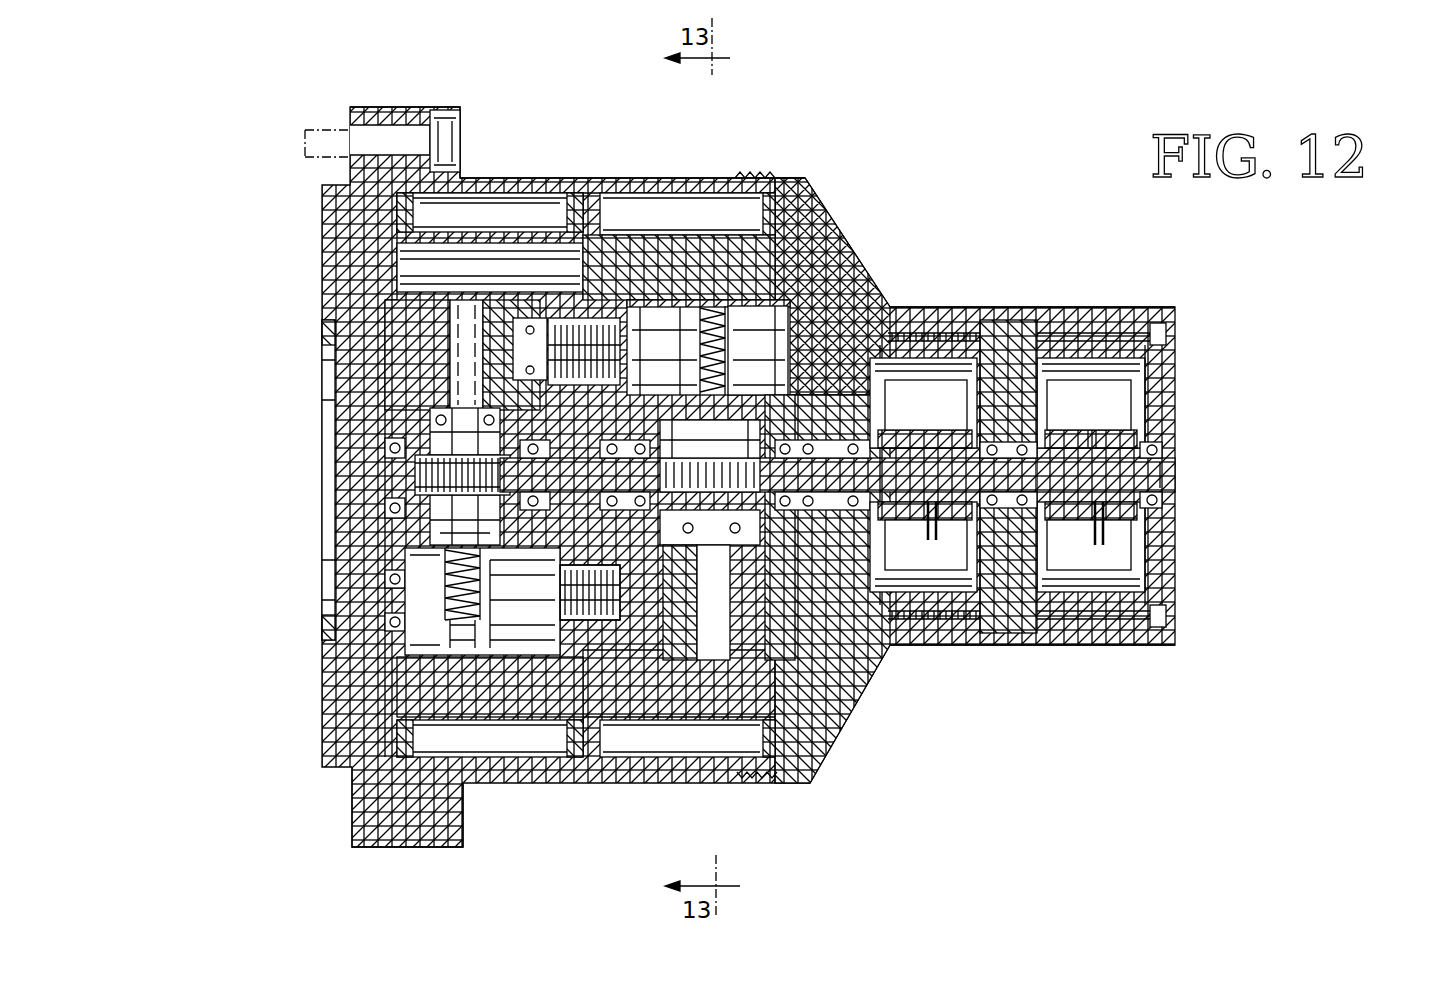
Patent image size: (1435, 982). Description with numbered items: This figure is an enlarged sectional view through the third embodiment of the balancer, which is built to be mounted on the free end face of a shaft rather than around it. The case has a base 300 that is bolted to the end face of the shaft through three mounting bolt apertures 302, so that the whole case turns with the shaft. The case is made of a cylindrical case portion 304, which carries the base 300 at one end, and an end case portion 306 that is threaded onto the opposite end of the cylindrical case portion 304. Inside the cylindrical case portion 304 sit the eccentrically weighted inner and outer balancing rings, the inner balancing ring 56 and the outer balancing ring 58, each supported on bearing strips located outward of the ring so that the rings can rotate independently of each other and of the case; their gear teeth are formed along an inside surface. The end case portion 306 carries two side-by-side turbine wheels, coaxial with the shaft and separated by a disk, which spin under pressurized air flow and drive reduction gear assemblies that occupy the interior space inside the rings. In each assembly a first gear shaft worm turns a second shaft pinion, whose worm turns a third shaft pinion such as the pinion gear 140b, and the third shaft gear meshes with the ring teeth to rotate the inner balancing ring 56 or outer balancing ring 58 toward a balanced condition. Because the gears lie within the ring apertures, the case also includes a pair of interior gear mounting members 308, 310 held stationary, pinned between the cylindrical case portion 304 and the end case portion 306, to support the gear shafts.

The base 300 is at (405, 108).
The mounting bolt apertures 302 is at (466, 125).
The cylindrical case portion 304 is at (598, 186).
The outer balancing ring 58 is at (735, 250).
The interior gear mounting member 310 is at (797, 392).
The end case portion 306 is at (860, 302).
The interior gear mounting member 308 is at (385, 327).
The inner balancing ring 56 is at (417, 695).
The pinion gear 140b is at (400, 750).